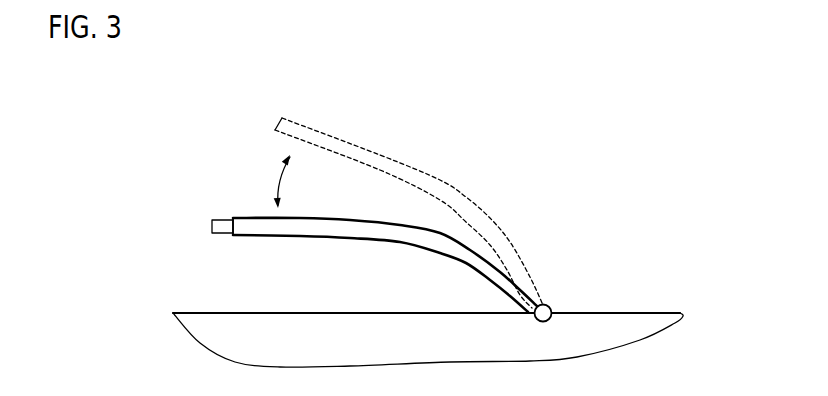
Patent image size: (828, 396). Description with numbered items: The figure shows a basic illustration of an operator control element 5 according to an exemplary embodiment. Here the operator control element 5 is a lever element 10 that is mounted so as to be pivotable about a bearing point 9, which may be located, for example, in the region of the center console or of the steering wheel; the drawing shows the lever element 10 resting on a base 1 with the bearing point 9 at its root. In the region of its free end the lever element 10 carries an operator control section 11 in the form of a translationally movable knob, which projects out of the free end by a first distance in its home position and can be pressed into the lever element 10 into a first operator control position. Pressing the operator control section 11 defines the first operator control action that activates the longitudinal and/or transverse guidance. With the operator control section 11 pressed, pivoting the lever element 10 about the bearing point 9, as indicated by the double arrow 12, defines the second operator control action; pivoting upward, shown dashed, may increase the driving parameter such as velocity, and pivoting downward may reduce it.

The base body 1 is at (357, 348).
The operator control element 5 is at (166, 171).
The bearing point 9 is at (552, 306).
The lever element 10 is at (500, 158).
The operator control section 11 is at (223, 218).
The double arrow 12 is at (283, 178).